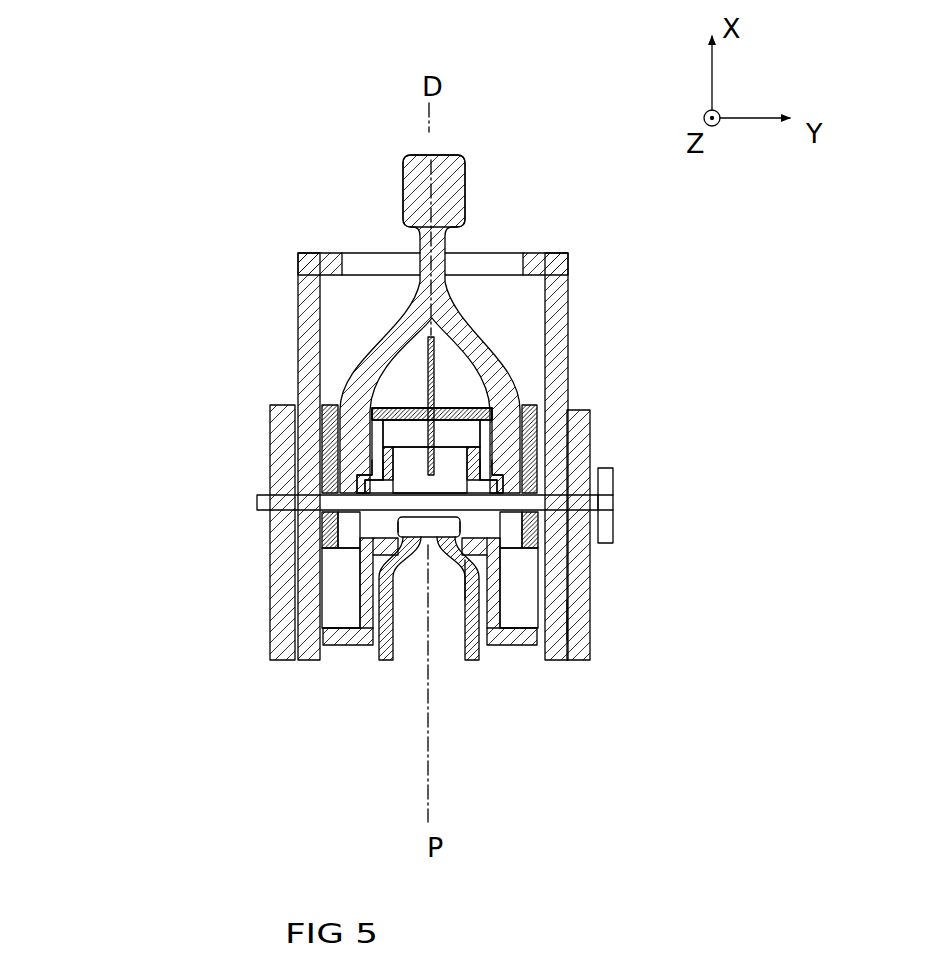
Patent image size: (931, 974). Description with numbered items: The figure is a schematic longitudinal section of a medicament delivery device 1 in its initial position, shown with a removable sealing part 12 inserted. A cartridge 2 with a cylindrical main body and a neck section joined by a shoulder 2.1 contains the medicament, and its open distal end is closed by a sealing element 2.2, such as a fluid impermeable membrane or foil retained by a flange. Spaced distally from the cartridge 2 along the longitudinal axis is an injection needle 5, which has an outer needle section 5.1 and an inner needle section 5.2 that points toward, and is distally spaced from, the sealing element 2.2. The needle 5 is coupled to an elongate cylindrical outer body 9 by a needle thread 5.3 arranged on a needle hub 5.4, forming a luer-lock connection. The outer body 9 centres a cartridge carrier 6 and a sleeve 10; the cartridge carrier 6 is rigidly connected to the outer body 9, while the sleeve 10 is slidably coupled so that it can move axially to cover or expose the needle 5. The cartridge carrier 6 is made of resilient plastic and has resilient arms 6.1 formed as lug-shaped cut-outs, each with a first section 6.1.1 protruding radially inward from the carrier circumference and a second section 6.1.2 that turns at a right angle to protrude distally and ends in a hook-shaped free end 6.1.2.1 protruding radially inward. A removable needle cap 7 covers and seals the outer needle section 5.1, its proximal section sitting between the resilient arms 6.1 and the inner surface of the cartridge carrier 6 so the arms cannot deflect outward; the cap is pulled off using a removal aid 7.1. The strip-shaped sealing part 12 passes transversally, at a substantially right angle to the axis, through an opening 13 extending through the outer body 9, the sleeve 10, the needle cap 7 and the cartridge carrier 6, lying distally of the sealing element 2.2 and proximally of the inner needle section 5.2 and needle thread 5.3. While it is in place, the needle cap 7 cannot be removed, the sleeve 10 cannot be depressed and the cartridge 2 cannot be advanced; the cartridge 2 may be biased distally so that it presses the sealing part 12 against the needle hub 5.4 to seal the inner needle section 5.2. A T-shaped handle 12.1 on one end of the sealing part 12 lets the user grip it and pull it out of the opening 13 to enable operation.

The medicament delivery device 1 is at (527, 128).
The cartridge 2 is at (466, 660).
The shoulder 2.1 is at (485, 565).
The sealing element 2.2 is at (397, 518).
The injection needle 5 is at (424, 396).
The outer needle section 5.1 is at (428, 345).
The inner needle section 5.2 is at (370, 458).
The needle thread 5.3 is at (488, 458).
The needle hub 5.4 is at (378, 412).
The cartridge carrier 6 is at (333, 468).
The resilient arms 6.1 is at (435, 624).
The first section 6.1.1 is at (350, 633).
The second section 6.1.2 is at (362, 574).
The hook-shaped free end 6.1.2.1 is at (372, 545).
The needle cap 7 is at (481, 319).
The removal aid 7.1 is at (413, 183).
The outer body 9 is at (577, 627).
The sleeve 10 is at (553, 352).
The sealing part 12 is at (260, 500).
The handle 12.1 is at (612, 490).
The opening 13 is at (598, 518).